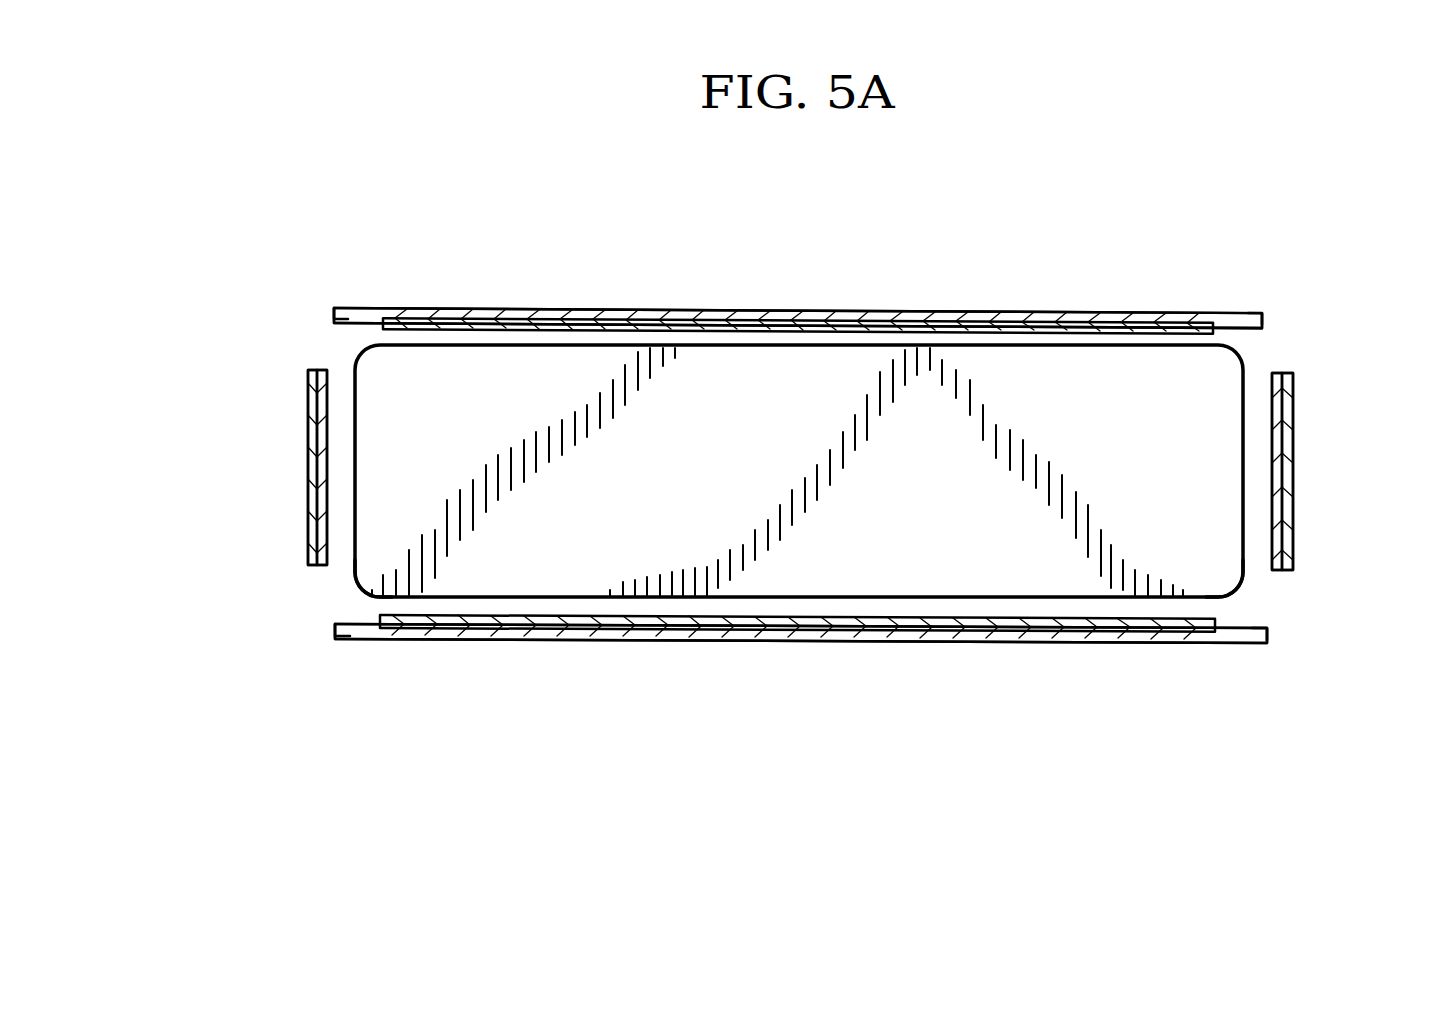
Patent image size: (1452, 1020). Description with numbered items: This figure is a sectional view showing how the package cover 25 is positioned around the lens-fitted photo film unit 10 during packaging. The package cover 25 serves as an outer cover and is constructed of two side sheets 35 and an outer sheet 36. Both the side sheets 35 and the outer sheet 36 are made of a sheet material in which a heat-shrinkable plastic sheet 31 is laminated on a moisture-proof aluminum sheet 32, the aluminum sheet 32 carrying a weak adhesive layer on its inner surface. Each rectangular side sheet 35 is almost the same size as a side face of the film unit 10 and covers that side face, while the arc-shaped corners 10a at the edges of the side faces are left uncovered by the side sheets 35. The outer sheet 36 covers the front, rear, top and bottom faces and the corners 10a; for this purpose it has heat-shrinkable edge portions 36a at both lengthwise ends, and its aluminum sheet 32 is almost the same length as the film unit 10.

The film unit 10 is at (1255, 362).
The corner 10a is at (355, 578).
The package cover 25 is at (1075, 725).
The plastic sheet 31 is at (888, 311).
The aluminum sheet 32 is at (986, 330).
The side sheet 35 is at (300, 470).
The outer sheet 36 is at (745, 304).
The edge portion 36a is at (343, 306).